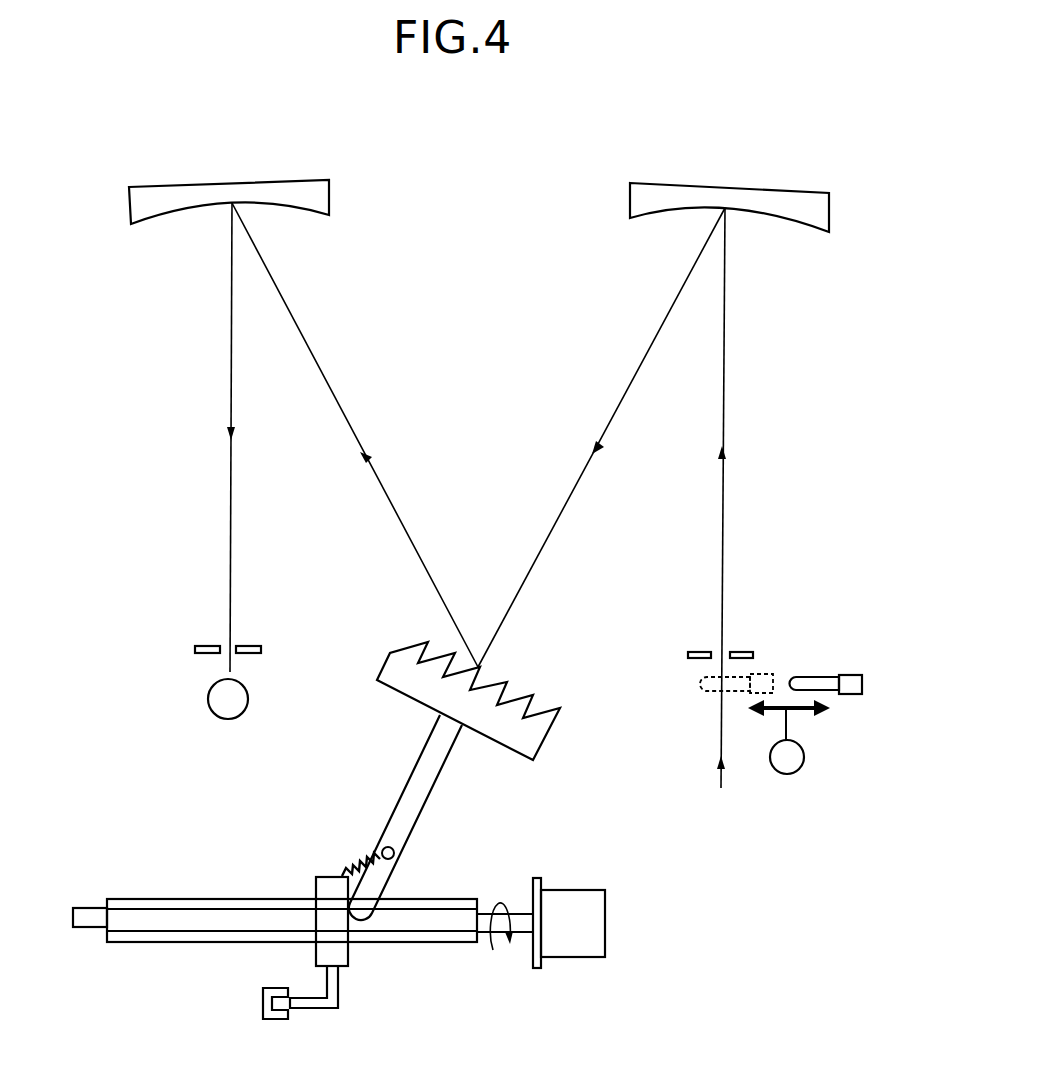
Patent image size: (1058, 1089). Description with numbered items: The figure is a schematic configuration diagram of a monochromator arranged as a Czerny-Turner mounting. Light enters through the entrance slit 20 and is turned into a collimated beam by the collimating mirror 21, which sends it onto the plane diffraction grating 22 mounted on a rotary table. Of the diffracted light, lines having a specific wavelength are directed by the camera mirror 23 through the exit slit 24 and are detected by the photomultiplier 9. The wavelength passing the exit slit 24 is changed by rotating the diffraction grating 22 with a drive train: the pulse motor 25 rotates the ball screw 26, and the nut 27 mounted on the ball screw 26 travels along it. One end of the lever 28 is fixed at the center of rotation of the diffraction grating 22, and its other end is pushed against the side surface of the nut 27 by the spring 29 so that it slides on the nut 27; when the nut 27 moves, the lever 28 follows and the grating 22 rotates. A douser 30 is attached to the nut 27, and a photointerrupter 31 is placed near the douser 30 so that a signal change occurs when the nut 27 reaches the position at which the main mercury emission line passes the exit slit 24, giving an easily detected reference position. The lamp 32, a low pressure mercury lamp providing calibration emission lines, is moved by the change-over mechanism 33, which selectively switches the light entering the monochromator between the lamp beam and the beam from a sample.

The photomultiplier 9 is at (212, 710).
The entrance slit 20 is at (698, 650).
The collimating mirror 21 is at (629, 200).
The plane diffraction grating 22 is at (386, 662).
The camera mirror 23 is at (331, 197).
The exit slit 24 is at (214, 643).
The pulse motor 25 is at (580, 958).
The ball screw 26 is at (150, 898).
The nut 27 is at (315, 885).
The lever 28 is at (406, 790).
The spring 29 is at (358, 858).
The douser 30 is at (341, 1002).
The photointerrupter 31 is at (260, 1010).
The lamp 32 is at (809, 676).
The change-over mechanism 33 is at (800, 770).